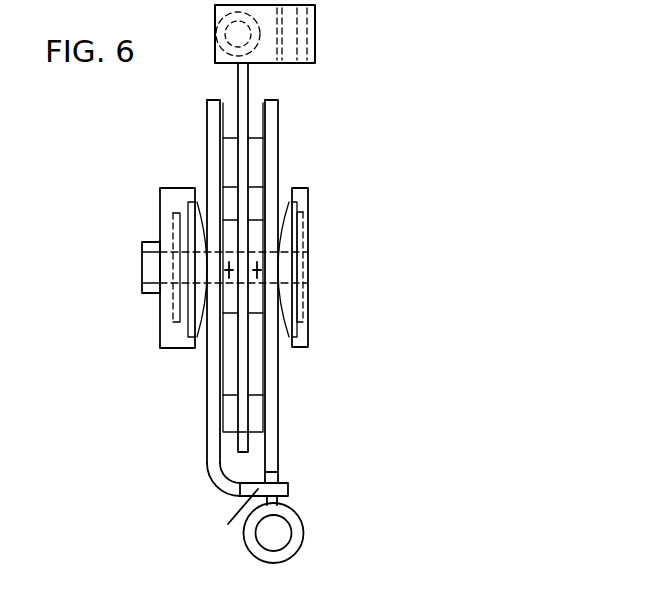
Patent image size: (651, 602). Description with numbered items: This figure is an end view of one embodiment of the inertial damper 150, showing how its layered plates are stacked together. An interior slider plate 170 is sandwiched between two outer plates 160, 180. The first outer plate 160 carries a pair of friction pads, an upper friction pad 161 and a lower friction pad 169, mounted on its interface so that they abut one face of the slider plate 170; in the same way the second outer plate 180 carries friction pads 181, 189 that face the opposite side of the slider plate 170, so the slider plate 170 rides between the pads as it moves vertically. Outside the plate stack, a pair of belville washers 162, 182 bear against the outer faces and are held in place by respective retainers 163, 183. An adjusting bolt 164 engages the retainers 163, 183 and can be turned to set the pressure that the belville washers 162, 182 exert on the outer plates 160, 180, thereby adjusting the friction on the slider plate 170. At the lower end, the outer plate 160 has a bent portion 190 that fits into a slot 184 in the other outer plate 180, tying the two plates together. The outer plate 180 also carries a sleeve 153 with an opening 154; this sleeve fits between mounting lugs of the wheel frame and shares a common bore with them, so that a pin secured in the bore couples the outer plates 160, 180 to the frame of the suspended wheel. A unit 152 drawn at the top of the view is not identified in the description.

The inertial damper 150 is at (404, 397).
The solenoid 152 is at (315, 14).
The sleeve 153 is at (253, 552).
The opening 154 is at (280, 524).
The outer plate 160 is at (208, 462).
The friction pad 161 is at (214, 123).
The belville washer 162 is at (192, 203).
The retainer 163 is at (162, 345).
The adjusting bolt 164 is at (142, 270).
The friction pad 169 is at (222, 412).
The slider plate 170 is at (248, 78).
The outer plate 180 is at (280, 445).
The friction pad 181 is at (272, 125).
The belville washer 182 is at (294, 203).
The retainer 183 is at (309, 318).
The slot 184 is at (289, 491).
The friction pad 189 is at (262, 410).
The bent portion 190 is at (228, 524).